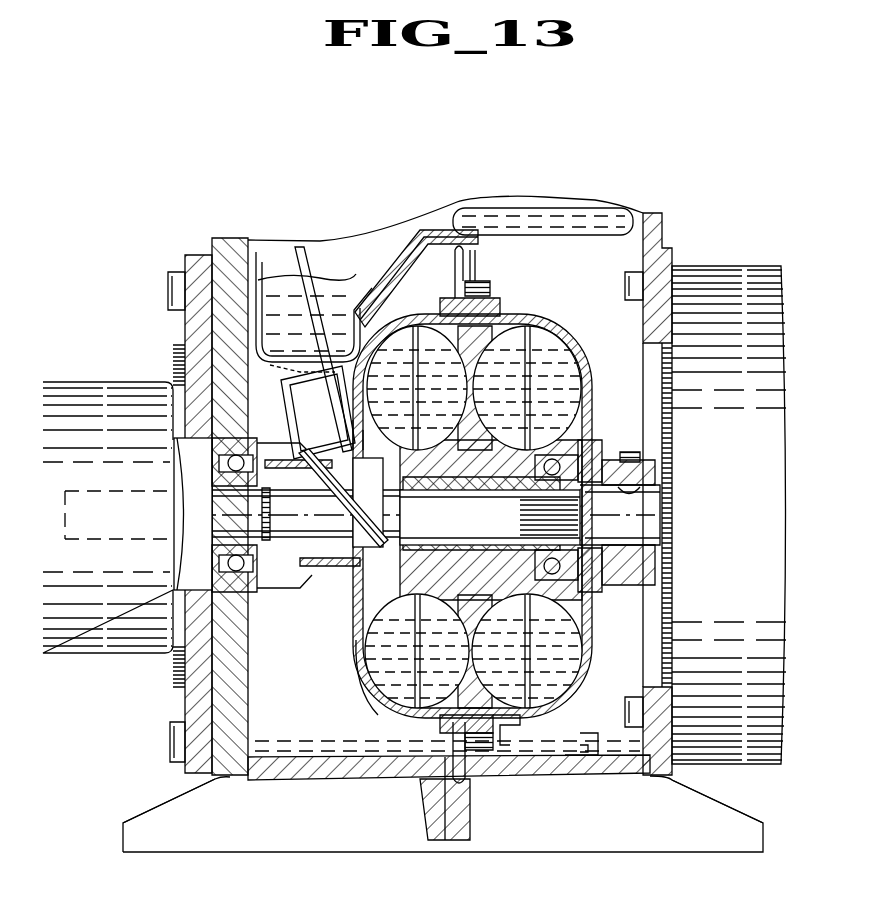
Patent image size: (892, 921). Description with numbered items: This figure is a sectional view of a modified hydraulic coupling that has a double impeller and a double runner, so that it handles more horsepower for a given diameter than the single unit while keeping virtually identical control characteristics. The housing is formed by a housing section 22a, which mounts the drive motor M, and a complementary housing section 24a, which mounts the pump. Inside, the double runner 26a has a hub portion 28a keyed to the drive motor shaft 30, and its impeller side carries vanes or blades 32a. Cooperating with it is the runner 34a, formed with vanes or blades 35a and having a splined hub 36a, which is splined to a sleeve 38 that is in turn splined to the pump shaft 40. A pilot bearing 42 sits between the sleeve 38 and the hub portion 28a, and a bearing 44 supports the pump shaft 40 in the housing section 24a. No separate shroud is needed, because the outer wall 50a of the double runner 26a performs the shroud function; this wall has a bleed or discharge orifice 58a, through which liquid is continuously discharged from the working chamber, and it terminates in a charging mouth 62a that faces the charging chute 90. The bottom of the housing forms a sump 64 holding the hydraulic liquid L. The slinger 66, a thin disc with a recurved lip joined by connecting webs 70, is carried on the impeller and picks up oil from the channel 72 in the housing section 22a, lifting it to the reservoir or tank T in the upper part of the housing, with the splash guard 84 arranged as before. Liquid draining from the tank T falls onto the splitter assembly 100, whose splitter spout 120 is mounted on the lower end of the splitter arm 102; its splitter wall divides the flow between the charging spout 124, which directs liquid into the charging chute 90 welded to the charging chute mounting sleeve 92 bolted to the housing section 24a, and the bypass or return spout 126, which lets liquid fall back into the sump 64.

The housing section 22a is at (657, 757).
The housing section 24a is at (250, 775).
The double runner 26a is at (586, 350).
The hub portion 28a is at (658, 471).
The drive motor shaft 30 is at (655, 516).
The vanes or blades 32a is at (463, 406).
The runner 34a is at (493, 332).
The vanes or blades 35a is at (562, 385).
The splined hub 36a is at (437, 470).
The sleeve 38 is at (389, 553).
The pump shaft 40 is at (506, 528).
The pilot bearing 42 is at (588, 456).
The bearing 44 is at (258, 555).
The outer wall 50a is at (352, 655).
The bleed or discharge orifice 58a is at (501, 719).
The charging mouth 62a is at (376, 588).
The sump 64 is at (583, 752).
The slinger 66 is at (479, 256).
The connecting webs 70 is at (464, 790).
The channel 72 is at (463, 793).
The splash guard 84 is at (404, 278).
The charging chute 90 is at (400, 446).
The charging chute mounting sleeve 92 is at (328, 566).
The splitter assembly 100 is at (318, 458).
The splitter arm 102 is at (303, 256).
The splitter spout 120 is at (277, 392).
The charging spout 124 is at (345, 434).
The bypass or return spout 126 is at (294, 396).
The hydraulic liquid L is at (285, 282).
The reservoir or tank T is at (601, 213).
The drive motor M is at (740, 274).